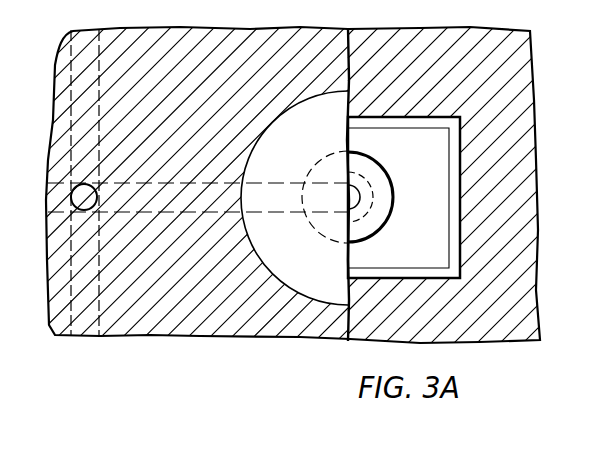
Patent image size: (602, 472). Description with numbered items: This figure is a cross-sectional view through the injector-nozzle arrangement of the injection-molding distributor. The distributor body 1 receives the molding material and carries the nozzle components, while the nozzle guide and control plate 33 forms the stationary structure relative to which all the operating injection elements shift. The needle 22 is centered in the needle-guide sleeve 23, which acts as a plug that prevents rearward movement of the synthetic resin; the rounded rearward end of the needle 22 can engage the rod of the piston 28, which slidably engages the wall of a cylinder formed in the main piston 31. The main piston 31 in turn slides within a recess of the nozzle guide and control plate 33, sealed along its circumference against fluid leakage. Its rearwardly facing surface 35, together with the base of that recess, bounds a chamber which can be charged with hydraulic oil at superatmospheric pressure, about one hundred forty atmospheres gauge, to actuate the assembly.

The body 1 is at (404, 197).
The needle 22 is at (362, 199).
The needle-guide sleeve 23 is at (381, 233).
The piston 28 is at (331, 238).
The main piston 31 is at (330, 293).
The nozzle guide and control plate 33 is at (537, 152).
The rearwardly facing surface 35 is at (294, 198).